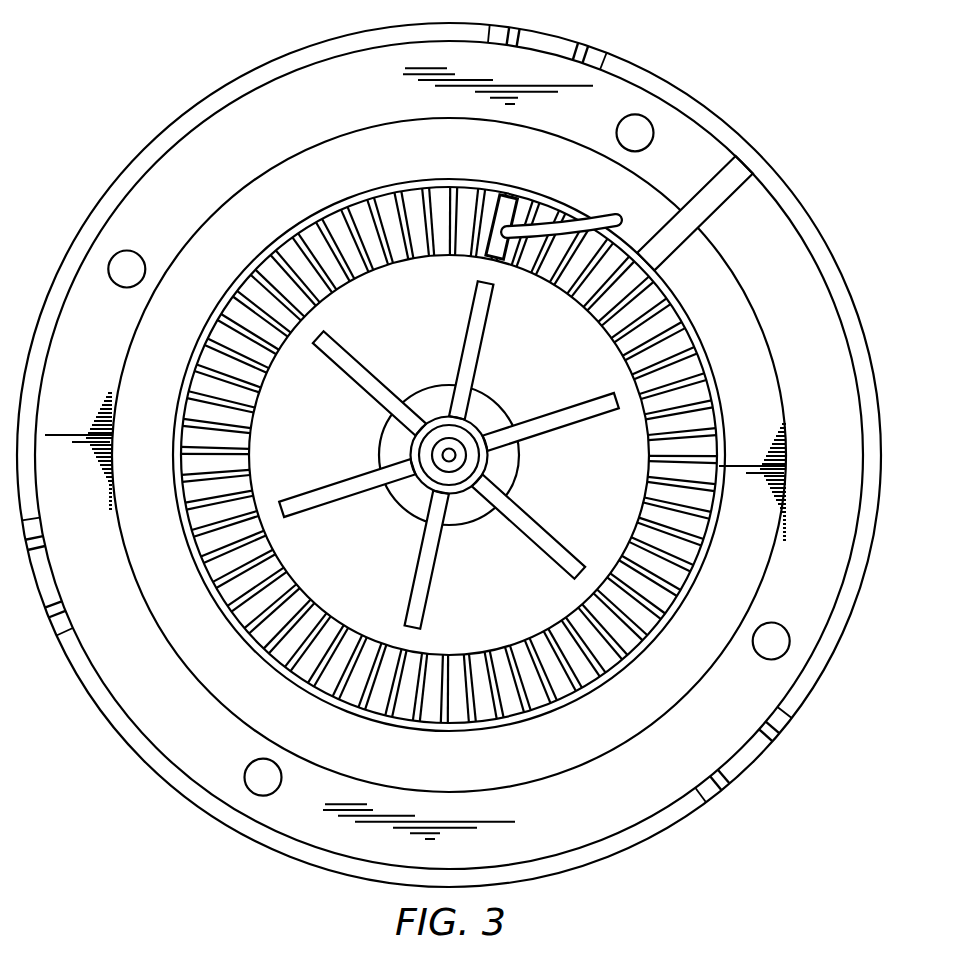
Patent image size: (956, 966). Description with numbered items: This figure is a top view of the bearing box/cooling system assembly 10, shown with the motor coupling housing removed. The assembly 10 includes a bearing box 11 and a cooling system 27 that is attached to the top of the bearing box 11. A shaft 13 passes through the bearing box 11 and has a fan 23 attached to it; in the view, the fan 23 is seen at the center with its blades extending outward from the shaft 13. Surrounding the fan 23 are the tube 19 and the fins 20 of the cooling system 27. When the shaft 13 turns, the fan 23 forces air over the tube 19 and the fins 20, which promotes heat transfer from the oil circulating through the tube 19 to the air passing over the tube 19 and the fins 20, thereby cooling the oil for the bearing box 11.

The bearing box/cooling system assembly 10 is at (198, 29).
The bearing box 11 is at (742, 137).
The shaft 13 is at (449, 455).
The tube 19 is at (598, 214).
The fins 20 is at (652, 637).
The fan 23 is at (490, 328).
The cooling system 27 is at (713, 367).